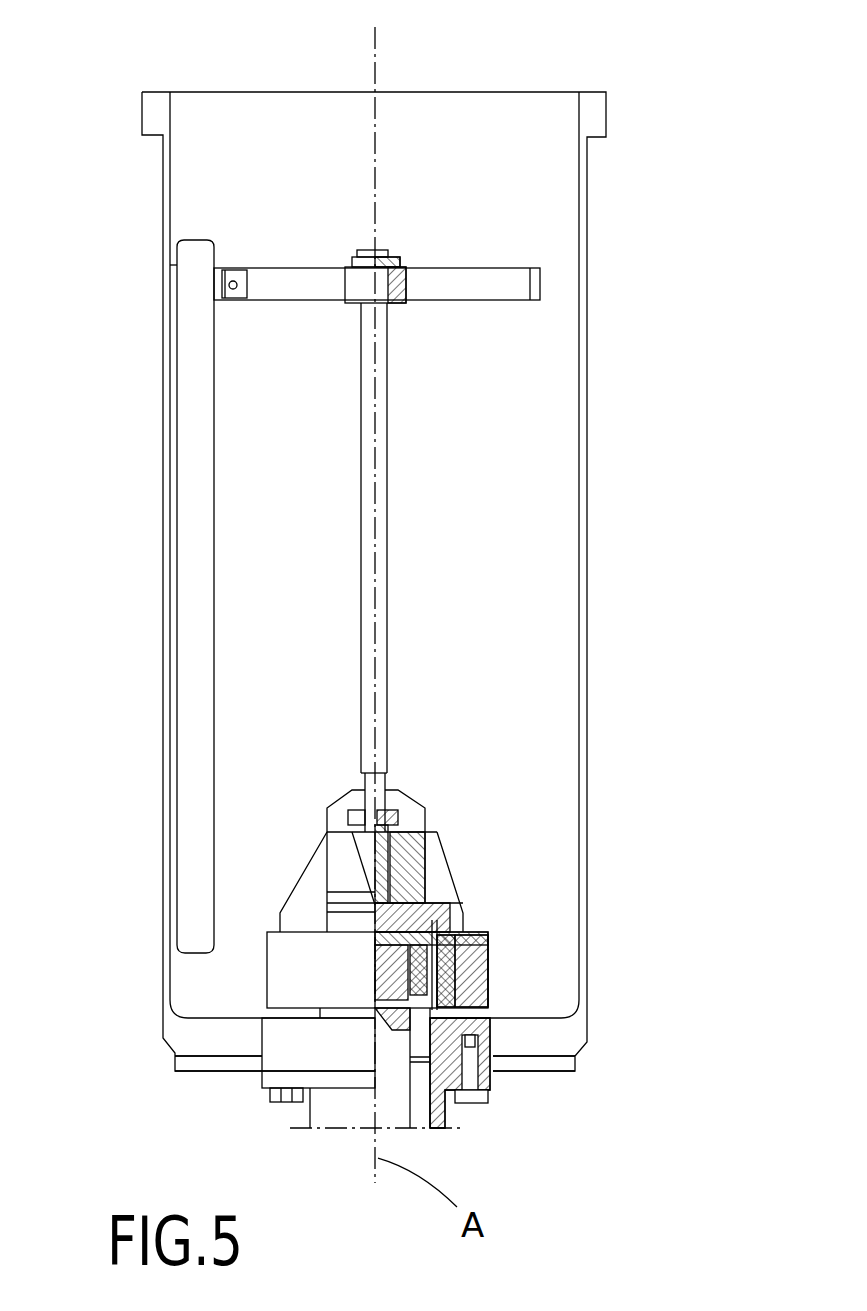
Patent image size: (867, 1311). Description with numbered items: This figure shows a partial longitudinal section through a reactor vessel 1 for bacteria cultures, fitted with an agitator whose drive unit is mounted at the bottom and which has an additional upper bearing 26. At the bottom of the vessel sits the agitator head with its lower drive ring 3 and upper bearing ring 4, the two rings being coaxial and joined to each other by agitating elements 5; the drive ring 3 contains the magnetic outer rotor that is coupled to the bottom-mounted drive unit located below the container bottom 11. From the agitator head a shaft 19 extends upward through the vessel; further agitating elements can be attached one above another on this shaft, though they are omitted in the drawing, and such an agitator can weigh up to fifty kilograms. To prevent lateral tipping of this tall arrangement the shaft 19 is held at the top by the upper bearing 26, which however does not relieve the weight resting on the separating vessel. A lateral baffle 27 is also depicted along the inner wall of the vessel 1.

The container housing 1 is at (603, 626).
The lower drive ring 3 is at (487, 968).
The upper bearing ring 4 is at (338, 858).
The agitating elements 5 is at (438, 890).
The container bottom 11 is at (547, 1045).
The shaft 19 is at (390, 508).
The upper bearing 26 is at (390, 262).
The guide bracket 27 is at (193, 430).